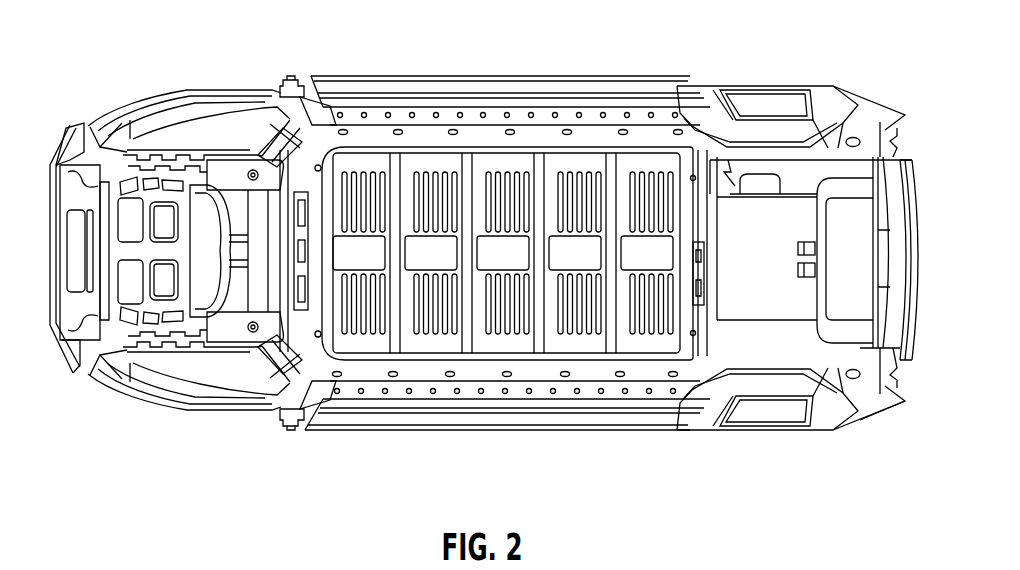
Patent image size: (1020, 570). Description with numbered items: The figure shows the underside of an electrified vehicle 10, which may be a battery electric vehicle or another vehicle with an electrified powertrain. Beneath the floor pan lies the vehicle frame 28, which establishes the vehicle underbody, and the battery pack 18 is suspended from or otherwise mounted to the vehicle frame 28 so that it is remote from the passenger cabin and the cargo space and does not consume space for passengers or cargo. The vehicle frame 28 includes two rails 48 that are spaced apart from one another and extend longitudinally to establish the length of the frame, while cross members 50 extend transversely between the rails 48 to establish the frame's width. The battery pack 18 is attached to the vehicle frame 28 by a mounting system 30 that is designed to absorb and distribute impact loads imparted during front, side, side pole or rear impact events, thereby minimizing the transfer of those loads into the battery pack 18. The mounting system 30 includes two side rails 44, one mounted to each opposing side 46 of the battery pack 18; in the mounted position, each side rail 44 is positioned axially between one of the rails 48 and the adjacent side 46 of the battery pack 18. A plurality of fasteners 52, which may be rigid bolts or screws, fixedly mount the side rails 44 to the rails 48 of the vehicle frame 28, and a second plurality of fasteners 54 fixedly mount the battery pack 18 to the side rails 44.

The electrified vehicle 10 is at (817, 59).
The battery pack 18 is at (608, 182).
The vehicle frame 28 is at (287, 410).
The mounting system 30 is at (348, 112).
The side rail 44 is at (503, 124).
The opposing side 46 is at (538, 138).
The rail 48 is at (450, 110).
The cross member 50 is at (703, 207).
The fastener 52 is at (627, 116).
The second fastener 54 is at (395, 130).